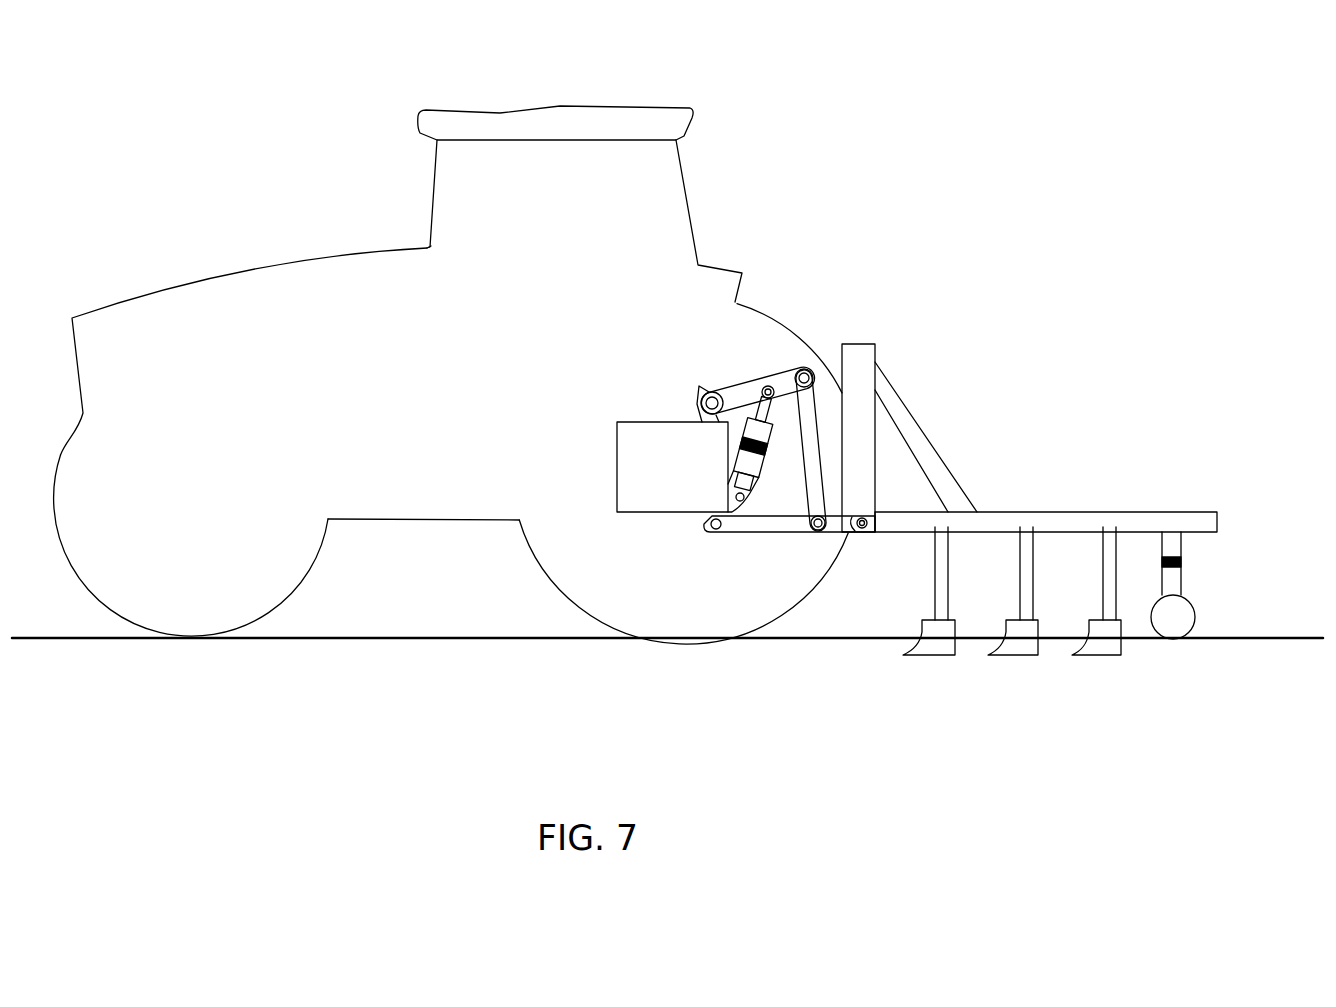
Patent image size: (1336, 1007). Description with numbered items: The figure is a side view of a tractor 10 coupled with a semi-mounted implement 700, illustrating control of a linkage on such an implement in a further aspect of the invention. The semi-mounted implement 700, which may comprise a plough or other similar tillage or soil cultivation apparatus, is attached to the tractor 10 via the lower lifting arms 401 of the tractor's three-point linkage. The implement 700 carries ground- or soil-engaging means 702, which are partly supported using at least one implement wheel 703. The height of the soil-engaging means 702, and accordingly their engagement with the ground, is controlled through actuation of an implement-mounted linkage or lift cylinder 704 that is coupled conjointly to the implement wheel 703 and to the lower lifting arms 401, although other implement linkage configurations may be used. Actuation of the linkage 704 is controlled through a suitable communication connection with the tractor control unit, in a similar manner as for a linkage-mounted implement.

The tractor 10 is at (239, 185).
The lower lifting arms 401 is at (795, 527).
The semi-mounted implement 700 is at (1055, 522).
The soil-engaging means 702 is at (1026, 644).
The implement wheel 703 is at (1173, 627).
The implement-mounted linkage or lift cylinder 704 is at (1182, 561).